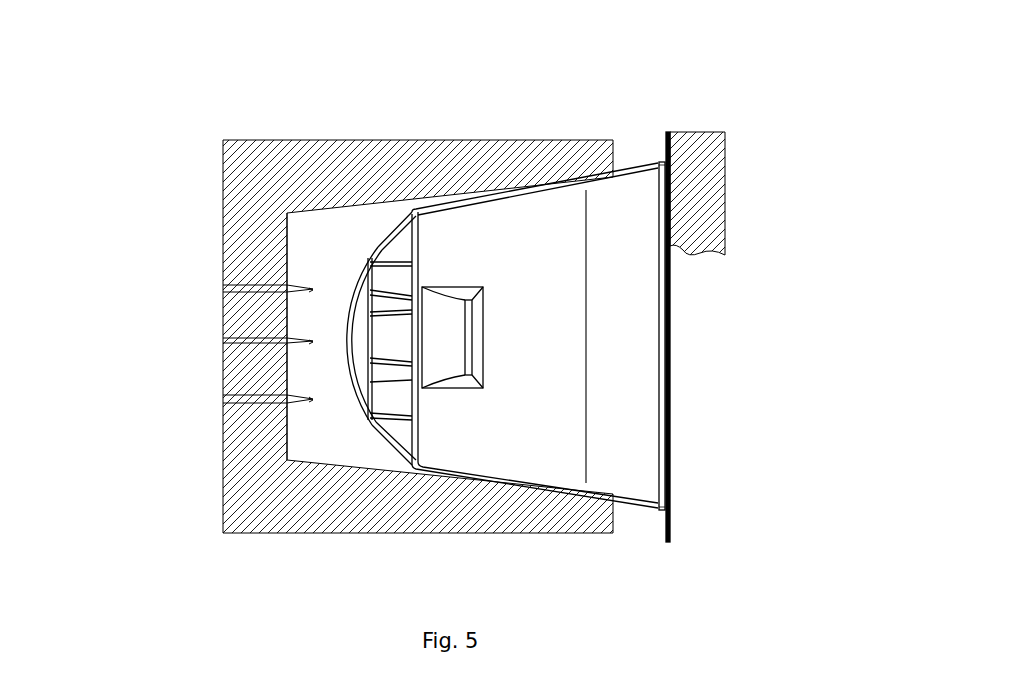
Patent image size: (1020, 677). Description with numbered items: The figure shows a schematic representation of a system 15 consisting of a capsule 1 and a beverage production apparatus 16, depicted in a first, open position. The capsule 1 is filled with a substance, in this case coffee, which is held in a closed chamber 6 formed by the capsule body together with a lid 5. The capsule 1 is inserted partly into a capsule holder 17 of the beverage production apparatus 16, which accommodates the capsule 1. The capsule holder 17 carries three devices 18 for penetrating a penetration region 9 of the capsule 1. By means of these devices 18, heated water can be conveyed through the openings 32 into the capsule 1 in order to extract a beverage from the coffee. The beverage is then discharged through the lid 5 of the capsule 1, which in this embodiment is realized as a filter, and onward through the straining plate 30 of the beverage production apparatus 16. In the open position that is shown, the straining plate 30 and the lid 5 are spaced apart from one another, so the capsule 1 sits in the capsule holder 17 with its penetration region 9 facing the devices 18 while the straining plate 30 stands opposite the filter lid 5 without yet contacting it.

The capsule 1 is at (711, 341).
The lid 5 is at (672, 401).
The closed chamber 6 is at (606, 268).
The penetration region 9 is at (357, 268).
The system 15 is at (458, 296).
The beverage production apparatus 16 is at (193, 204).
The capsule holder 17 is at (308, 289).
The devices for penetrating 18 is at (313, 400).
The straining plate 30 is at (690, 198).
The openings 32 is at (311, 399).